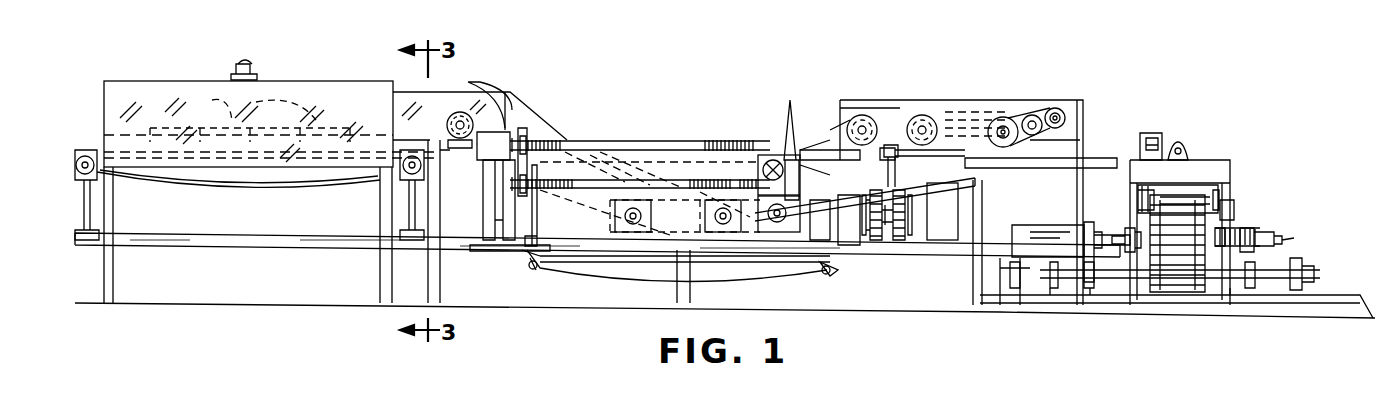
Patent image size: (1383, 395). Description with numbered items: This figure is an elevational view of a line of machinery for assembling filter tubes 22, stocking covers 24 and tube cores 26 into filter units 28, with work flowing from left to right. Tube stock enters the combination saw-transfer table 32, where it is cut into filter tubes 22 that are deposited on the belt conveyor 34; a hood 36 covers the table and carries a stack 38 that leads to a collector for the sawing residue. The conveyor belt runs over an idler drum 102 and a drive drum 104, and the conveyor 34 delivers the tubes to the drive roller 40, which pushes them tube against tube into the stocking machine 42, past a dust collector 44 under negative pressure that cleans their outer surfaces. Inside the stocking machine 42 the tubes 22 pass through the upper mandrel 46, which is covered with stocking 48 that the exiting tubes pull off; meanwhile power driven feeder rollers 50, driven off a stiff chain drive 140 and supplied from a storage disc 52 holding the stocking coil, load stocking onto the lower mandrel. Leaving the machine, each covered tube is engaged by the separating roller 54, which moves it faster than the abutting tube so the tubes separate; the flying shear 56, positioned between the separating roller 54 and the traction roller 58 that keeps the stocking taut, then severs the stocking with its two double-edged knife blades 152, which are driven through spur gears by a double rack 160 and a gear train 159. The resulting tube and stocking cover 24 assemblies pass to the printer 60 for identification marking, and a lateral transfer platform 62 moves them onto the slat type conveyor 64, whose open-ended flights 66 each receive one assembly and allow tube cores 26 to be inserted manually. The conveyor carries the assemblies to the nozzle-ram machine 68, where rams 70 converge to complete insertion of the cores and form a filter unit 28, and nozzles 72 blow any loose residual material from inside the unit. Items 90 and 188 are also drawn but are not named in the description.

The filter tube 22 is at (255, 104).
The stocking cover 24 is at (960, 146).
The tube core 26 is at (1220, 235).
The filter unit 28 is at (1170, 215).
The saw-transfer table 32 is at (136, 72).
The belt conveyor 34 is at (318, 192).
The hood 36 is at (370, 82).
The stack 38 is at (236, 64).
The drive roller 40 is at (450, 108).
The stocking machine 42 is at (623, 139).
The dust collector 44 is at (522, 121).
The mandrel 46 is at (666, 142).
The stocking 48 is at (797, 134).
The feeder roller 50 is at (778, 148).
The storage disc 52 is at (943, 195).
The separating roller 54 is at (856, 114).
The flying shear 56 is at (891, 134).
The traction roller 58 is at (924, 114).
The printer 60 is at (1057, 108).
The lateral transfer platform 62 is at (1208, 148).
The slat type conveyor 64 is at (1234, 200).
The flight 66 is at (1192, 276).
The nozzle-ram machine 68 is at (1016, 228).
The ram 70 is at (1090, 216).
The nozzle 72 is at (1127, 228).
The eye bracket 90 is at (1178, 142).
The idler drum 102 is at (102, 177).
The drive drum 104 is at (374, 176).
The stiff chain drive 140 is at (792, 282).
The double-edged knife blade 152 is at (900, 144).
The gear train 159 is at (900, 246).
The double rack 160 is at (892, 242).
The switch block 188 is at (1154, 138).